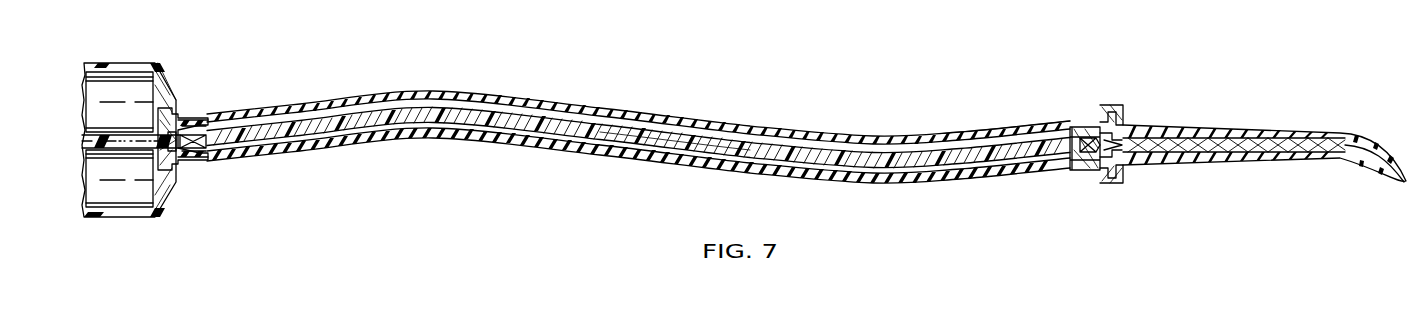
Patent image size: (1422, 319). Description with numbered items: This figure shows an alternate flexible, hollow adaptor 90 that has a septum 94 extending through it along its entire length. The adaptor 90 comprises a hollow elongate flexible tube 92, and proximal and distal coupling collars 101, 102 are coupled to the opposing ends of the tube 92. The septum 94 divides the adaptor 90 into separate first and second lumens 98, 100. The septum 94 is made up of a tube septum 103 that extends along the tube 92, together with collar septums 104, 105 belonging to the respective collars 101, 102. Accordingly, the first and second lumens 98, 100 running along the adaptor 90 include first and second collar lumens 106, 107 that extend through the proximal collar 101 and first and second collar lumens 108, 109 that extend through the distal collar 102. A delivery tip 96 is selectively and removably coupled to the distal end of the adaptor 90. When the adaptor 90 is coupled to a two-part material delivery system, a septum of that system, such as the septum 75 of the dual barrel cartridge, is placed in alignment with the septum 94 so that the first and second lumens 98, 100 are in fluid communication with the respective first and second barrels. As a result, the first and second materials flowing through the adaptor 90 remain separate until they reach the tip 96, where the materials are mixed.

The septum 75 is at (131, 139).
The proximal coupling collar 101 is at (176, 110).
The first collar lumen 106 is at (181, 128).
The second collar lumen 107 is at (191, 149).
The collar septum 104 is at (183, 152).
The adaptor 90 is at (801, 119).
The first lumen 98 is at (465, 104).
The septum 94 is at (426, 123).
The tube septum 103 is at (688, 142).
The second lumen 100 is at (838, 174).
The hollow elongate flexible tube 92 is at (950, 129).
The collar septum 105 is at (1097, 146).
The first collar lumen 108 is at (1090, 139).
The second collar lumen 109 is at (1089, 151).
The distal coupling collar 102 is at (1113, 104).
The delivery tip 96 is at (1182, 172).